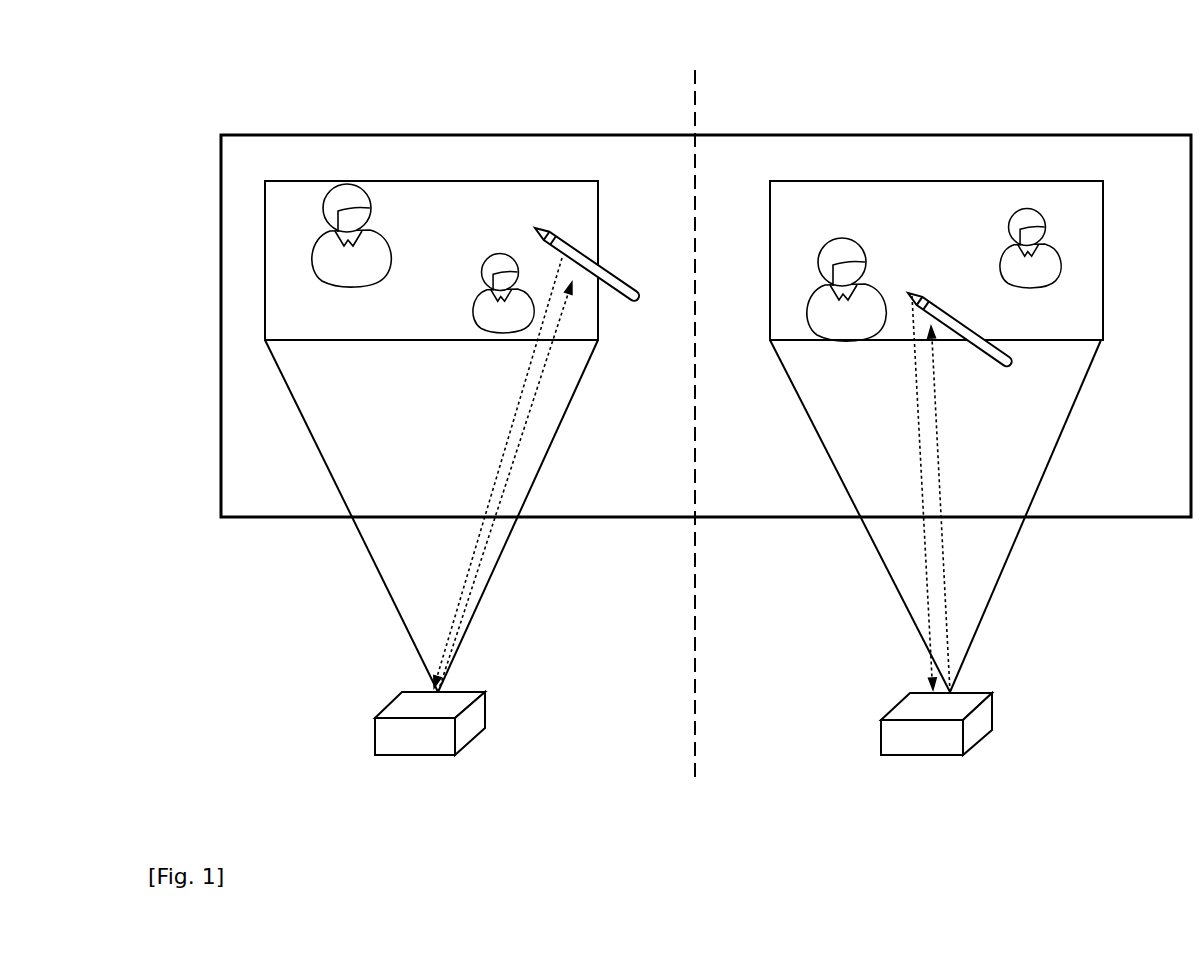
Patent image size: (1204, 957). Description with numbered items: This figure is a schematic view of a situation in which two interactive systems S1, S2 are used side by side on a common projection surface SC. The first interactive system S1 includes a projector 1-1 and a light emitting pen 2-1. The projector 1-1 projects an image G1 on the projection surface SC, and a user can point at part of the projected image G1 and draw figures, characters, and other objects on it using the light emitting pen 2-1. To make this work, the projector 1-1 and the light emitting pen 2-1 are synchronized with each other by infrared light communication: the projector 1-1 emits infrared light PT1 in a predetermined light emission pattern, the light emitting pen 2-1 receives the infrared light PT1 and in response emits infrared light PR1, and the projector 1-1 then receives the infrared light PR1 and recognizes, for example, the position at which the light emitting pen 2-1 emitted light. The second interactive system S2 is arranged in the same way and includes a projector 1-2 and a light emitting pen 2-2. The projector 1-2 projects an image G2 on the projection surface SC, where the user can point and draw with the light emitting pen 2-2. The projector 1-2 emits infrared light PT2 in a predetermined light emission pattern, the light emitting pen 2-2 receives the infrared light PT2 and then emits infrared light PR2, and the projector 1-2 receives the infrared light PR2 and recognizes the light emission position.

The projection surface SC is at (733, 134).
The interactive system S1 is at (455, 113).
The interactive system S2 is at (965, 113).
The image G1 is at (531, 181).
The image G2 is at (1021, 181).
The projector 1-1 is at (392, 703).
The projector 1-2 is at (900, 702).
The light emitting pen 2-1 is at (597, 271).
The light emitting pen 2-2 is at (998, 364).
The infrared light PR1 is at (498, 461).
The infrared light PT1 is at (520, 441).
The infrared light PR2 is at (917, 410).
The infrared light PT2 is at (937, 428).